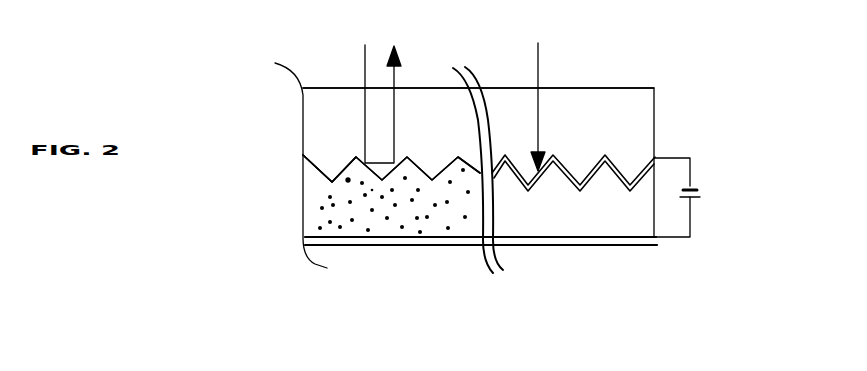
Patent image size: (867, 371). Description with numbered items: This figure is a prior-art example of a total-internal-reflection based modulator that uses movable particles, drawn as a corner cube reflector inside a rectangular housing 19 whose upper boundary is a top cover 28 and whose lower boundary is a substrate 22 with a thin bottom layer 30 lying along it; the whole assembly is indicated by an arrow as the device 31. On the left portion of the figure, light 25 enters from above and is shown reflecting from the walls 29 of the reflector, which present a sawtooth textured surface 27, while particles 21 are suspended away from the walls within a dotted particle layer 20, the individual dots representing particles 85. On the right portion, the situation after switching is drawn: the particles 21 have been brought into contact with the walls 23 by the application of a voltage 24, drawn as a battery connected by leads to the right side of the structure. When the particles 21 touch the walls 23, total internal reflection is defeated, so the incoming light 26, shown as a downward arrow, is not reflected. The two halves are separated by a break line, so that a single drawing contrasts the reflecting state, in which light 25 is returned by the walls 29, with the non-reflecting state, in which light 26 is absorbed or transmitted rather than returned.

The housing 19 is at (637, 105).
The particle layer 20 is at (430, 225).
The particles 21 is at (368, 230).
The substrate 22 is at (585, 240).
The walls 23 is at (648, 165).
The voltage 24 is at (695, 172).
The light 25 is at (363, 77).
The light 26 is at (540, 58).
The textured surface 27 is at (332, 163).
The top cover 28 is at (592, 83).
The walls 29 is at (317, 181).
The bottom layer 30 is at (541, 243).
The device 31 is at (497, 174).
The particles 85 is at (312, 218).